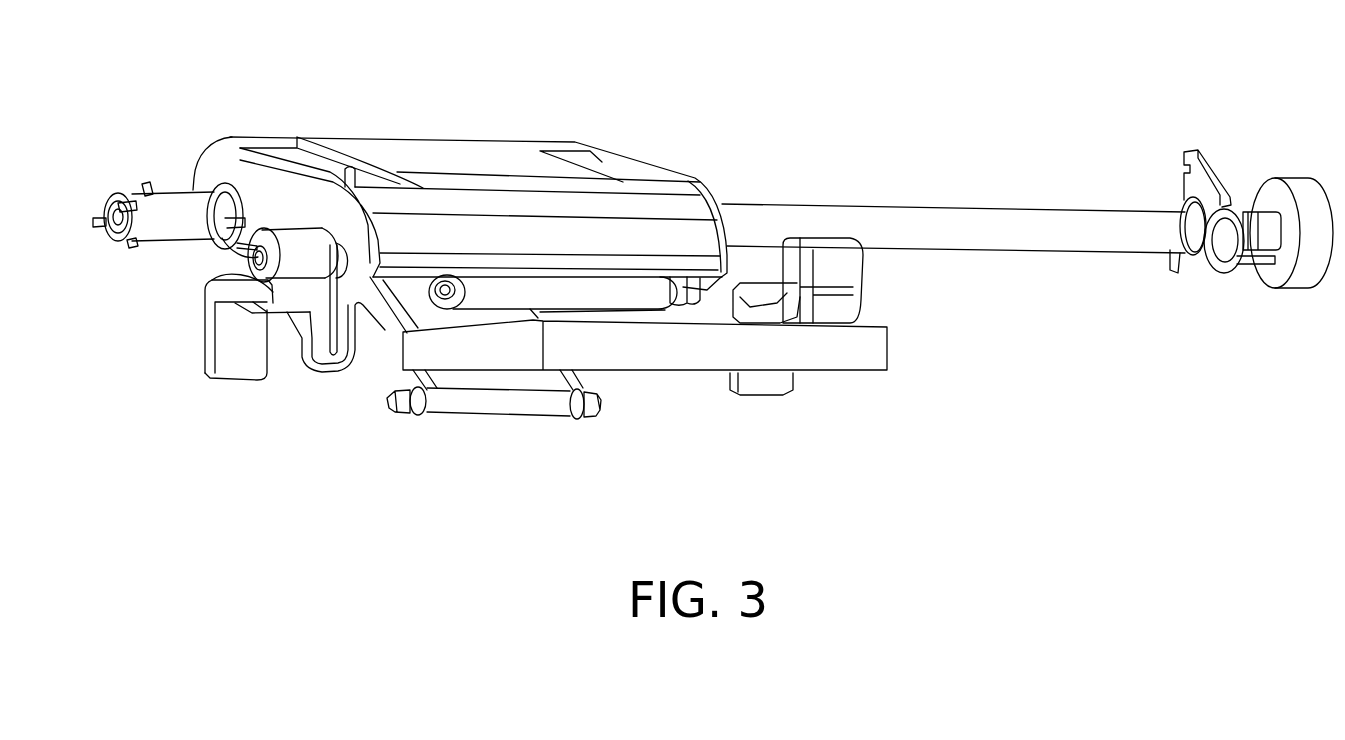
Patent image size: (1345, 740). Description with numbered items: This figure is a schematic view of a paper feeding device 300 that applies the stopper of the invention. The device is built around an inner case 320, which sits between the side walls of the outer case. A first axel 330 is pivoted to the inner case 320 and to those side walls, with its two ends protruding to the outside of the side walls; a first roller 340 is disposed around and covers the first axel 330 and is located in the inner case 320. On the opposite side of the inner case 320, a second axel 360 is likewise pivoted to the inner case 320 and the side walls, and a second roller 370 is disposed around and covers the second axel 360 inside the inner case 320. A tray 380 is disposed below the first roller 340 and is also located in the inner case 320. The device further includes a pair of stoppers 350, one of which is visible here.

The paper feeding device 300 is at (1257, 519).
The inner case 320 is at (247, 167).
The first axel 330 is at (247, 263).
The first roller 340 is at (620, 303).
The stopper 350 is at (283, 303).
The second axel 360 is at (173, 207).
The second roller 370 is at (258, 262).
The tray 380 is at (823, 350).